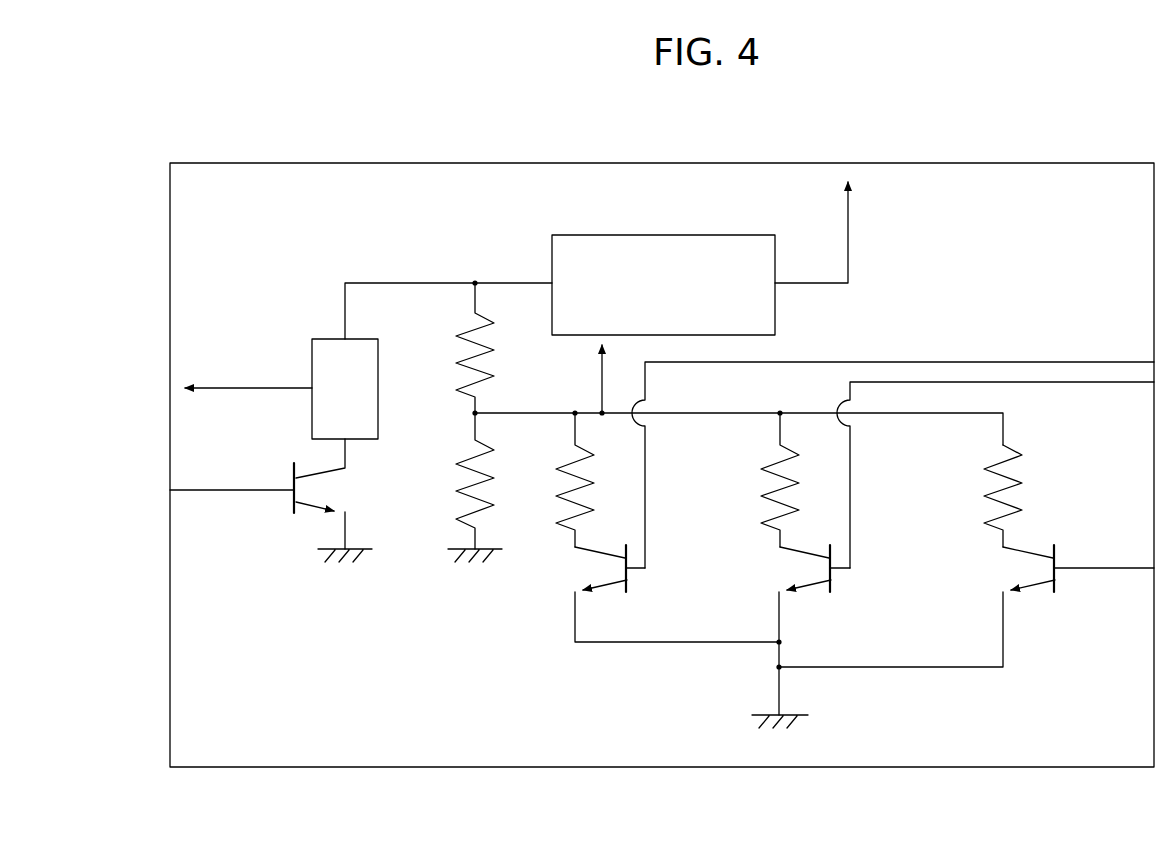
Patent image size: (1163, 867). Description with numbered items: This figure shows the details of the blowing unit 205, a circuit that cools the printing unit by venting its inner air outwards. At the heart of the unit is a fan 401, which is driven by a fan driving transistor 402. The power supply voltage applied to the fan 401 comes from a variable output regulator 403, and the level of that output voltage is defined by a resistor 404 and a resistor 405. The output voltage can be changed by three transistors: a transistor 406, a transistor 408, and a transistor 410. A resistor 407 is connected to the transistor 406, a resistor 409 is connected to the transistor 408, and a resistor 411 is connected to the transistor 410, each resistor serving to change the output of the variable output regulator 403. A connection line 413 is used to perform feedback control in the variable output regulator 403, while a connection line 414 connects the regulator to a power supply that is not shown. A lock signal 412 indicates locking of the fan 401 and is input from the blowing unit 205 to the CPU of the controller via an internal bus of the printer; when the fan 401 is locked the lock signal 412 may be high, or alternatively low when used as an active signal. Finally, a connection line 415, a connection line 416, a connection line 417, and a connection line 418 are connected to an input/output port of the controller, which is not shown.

The blowing unit 205 is at (585, 162).
The fan 401 is at (312, 345).
The fan driving transistor 402 is at (287, 503).
The variable output regulator 403 is at (552, 262).
The resistor 404 is at (455, 350).
The resistor 405 is at (453, 482).
The transistor 406 is at (560, 590).
The resistor 407 is at (548, 488).
The transistor 408 is at (777, 565).
The resistor 409 is at (748, 488).
The transistor 410 is at (1000, 567).
The resistor 411 is at (977, 483).
The lock signal 412 is at (250, 390).
The connection line 413 is at (600, 392).
The connection line 414 is at (850, 245).
The connection line 415 is at (197, 490).
The connection line 416 is at (1110, 570).
The connection line 417 is at (1105, 383).
The connection line 418 is at (1075, 362).